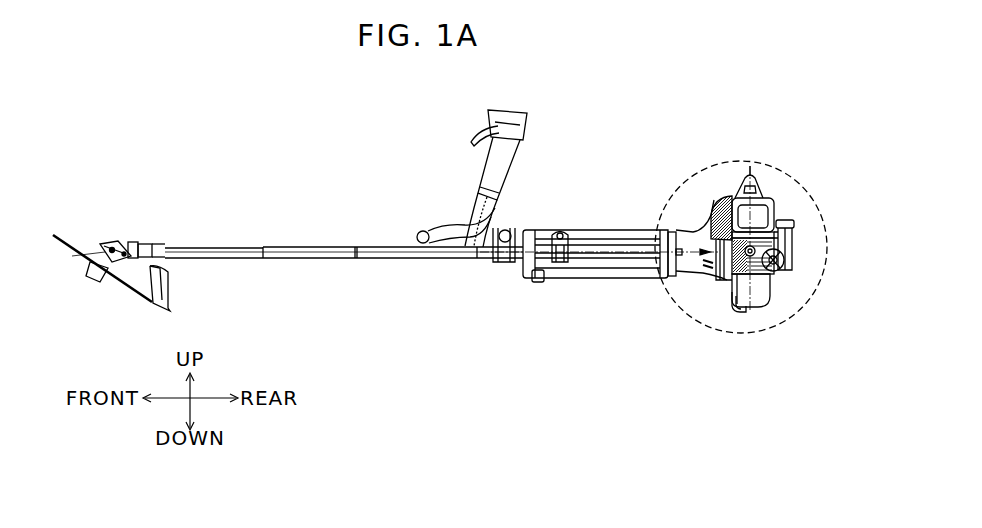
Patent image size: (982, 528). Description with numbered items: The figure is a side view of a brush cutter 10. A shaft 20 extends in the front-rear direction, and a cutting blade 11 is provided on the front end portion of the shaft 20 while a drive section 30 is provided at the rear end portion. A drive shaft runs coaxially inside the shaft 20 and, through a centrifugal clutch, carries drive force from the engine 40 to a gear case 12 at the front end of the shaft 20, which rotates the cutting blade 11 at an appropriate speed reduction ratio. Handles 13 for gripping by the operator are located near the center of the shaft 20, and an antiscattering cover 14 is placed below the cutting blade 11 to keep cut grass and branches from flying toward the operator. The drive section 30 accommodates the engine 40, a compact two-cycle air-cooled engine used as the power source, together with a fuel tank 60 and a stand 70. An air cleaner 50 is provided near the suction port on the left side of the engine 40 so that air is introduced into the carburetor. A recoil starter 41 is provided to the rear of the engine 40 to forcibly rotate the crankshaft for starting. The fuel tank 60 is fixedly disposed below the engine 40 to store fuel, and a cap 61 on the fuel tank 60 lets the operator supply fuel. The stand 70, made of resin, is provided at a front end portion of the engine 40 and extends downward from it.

The brush cutter 10 is at (300, 303).
The cutting blade 11 is at (62, 238).
The gear case 12 is at (112, 240).
The handle 13 is at (490, 204).
The antiscattering cover 14 is at (162, 288).
The shaft 20 is at (256, 247).
The drive section 30 is at (711, 206).
The engine 40 is at (764, 196).
The starter 41 is at (792, 240).
The air cleaner 50 is at (762, 217).
The fuel tank 60 is at (756, 293).
The cap 61 is at (779, 278).
The stand 70 is at (735, 305).